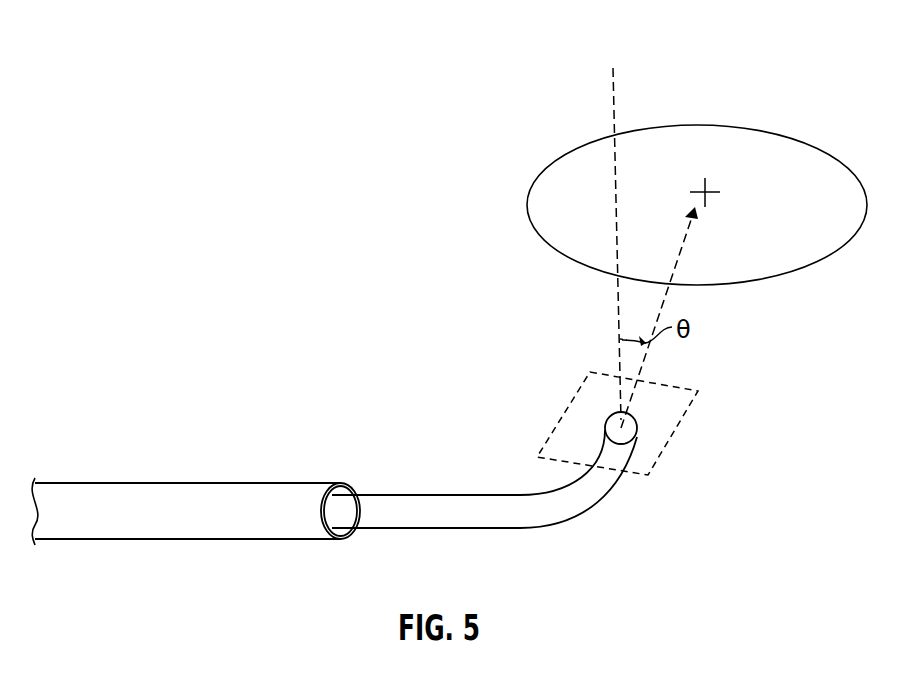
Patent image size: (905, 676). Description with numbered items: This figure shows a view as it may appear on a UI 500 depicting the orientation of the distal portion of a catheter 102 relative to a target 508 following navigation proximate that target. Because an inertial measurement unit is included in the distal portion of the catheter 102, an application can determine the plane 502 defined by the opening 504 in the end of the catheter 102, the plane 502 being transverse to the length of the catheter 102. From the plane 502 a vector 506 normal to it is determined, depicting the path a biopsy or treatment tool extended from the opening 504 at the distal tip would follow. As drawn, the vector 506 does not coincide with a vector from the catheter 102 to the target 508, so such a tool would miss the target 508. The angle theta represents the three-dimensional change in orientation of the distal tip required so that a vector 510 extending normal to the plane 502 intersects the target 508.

The UI 500 is at (731, 48).
The catheter 102 is at (577, 511).
The plane 502 is at (637, 435).
The opening 504 is at (690, 408).
The vector 506 is at (613, 90).
The target 508 is at (708, 198).
The vector 510 is at (676, 268).